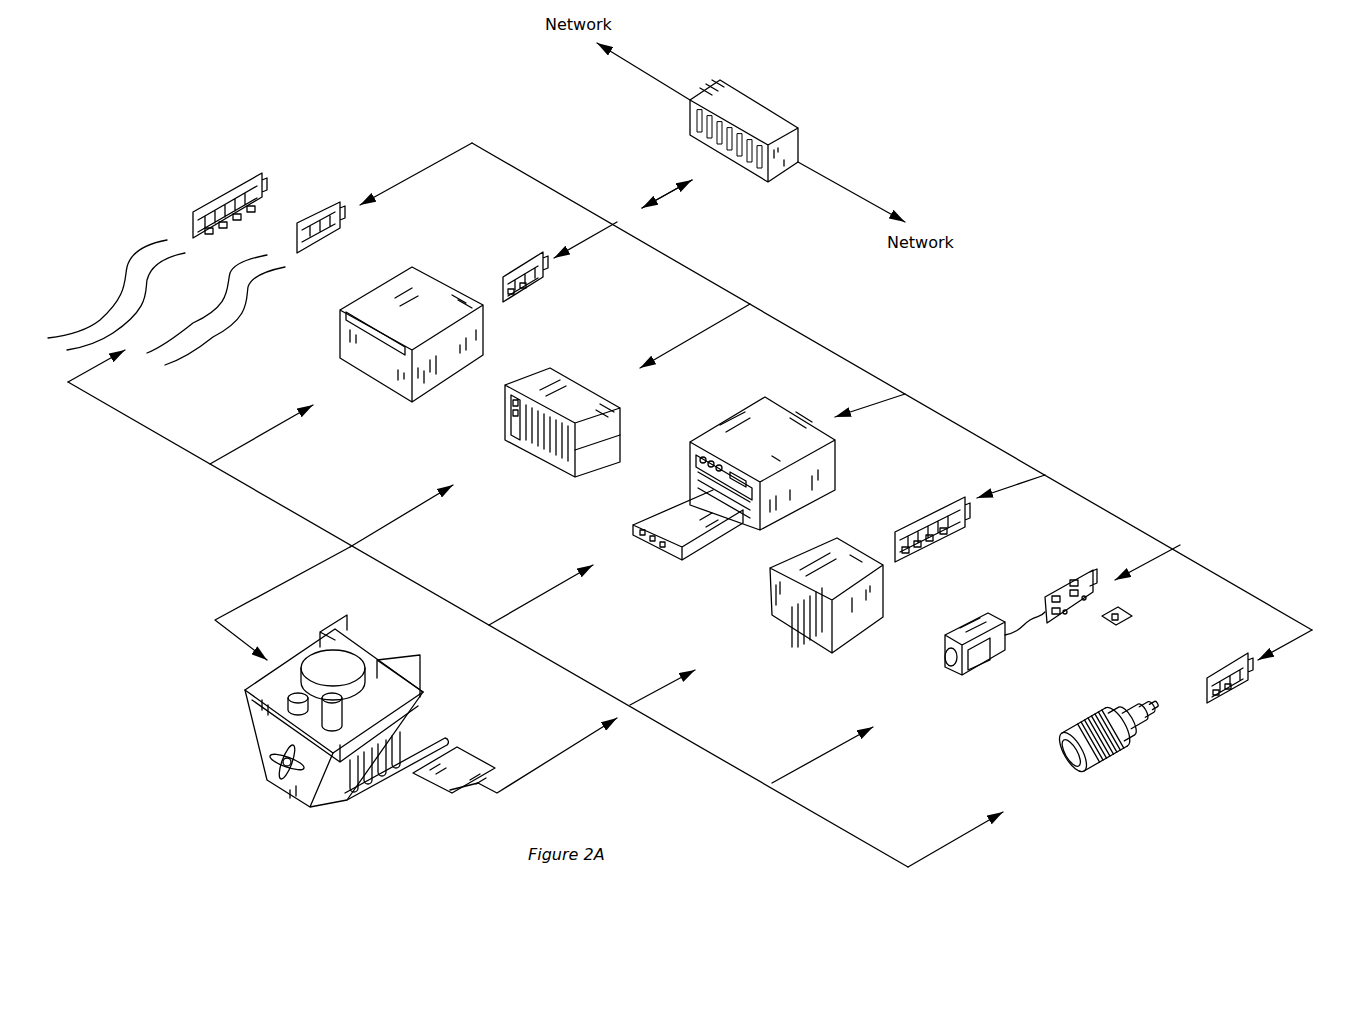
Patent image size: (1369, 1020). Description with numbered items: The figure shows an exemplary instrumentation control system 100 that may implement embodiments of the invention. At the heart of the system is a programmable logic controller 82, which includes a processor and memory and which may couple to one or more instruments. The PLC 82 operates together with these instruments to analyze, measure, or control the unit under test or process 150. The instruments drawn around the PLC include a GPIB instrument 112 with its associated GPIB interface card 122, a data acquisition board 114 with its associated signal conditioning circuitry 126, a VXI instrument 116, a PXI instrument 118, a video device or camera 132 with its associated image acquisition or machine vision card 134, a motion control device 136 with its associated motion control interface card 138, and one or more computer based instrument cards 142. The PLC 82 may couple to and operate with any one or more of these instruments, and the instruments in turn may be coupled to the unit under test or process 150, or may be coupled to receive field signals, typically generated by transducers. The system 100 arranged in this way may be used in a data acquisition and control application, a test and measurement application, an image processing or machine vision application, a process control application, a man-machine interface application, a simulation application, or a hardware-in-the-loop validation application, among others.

The instrumentation control system 100 is at (1052, 180).
The programmable logic controller 82 is at (757, 110).
The computer based instrument cards 142 is at (205, 202).
The GPIB interface card 122 is at (515, 267).
The GPIB instrument 112 is at (375, 300).
The PXI instrument 118 is at (570, 390).
The VXI instrument 116 is at (732, 433).
The data acquisition board 114 is at (953, 500).
The signal conditioning circuitry 126 is at (798, 625).
The video device or camera 132 is at (977, 665).
The image acquisition card 134 is at (1063, 582).
The motion control interface card 138 is at (1233, 693).
The motion control device 136 is at (1113, 753).
The unit under test or process 150 is at (258, 730).